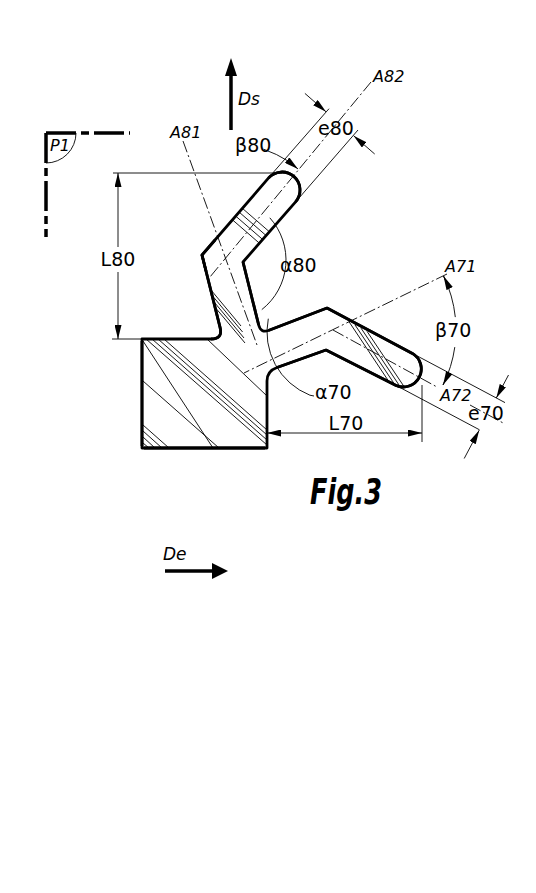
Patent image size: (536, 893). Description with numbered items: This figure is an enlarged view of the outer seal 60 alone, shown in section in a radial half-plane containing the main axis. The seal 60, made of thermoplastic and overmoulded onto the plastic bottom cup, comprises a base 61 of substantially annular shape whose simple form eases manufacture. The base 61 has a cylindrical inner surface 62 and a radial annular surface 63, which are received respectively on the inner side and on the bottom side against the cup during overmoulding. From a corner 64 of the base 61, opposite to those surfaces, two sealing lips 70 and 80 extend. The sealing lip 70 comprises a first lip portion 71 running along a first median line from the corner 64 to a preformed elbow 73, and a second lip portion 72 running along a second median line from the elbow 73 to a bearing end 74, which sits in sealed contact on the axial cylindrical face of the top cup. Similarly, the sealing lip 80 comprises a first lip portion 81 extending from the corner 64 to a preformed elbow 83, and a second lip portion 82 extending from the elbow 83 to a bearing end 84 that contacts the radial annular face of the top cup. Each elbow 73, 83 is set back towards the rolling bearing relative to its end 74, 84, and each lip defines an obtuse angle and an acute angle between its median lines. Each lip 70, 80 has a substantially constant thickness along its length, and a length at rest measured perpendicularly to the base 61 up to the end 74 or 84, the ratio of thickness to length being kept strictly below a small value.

The outer seal 60 is at (163, 458).
The base 61 is at (157, 367).
The cylindrical inner surface 62 is at (142, 397).
The radial annular surface 63 is at (220, 450).
The corner 64 is at (278, 324).
The sealing lip 70 is at (458, 353).
The first lip portion 71 is at (324, 300).
The second lip portion 72 is at (361, 325).
The preformed elbow 73 is at (332, 305).
The bearing end 74 is at (420, 390).
The sealing lip 80 is at (273, 105).
The first lip portion 81 is at (213, 322).
The second lip portion 82 is at (238, 229).
The preformed elbow 83 is at (201, 256).
The bearing end 84 is at (298, 184).